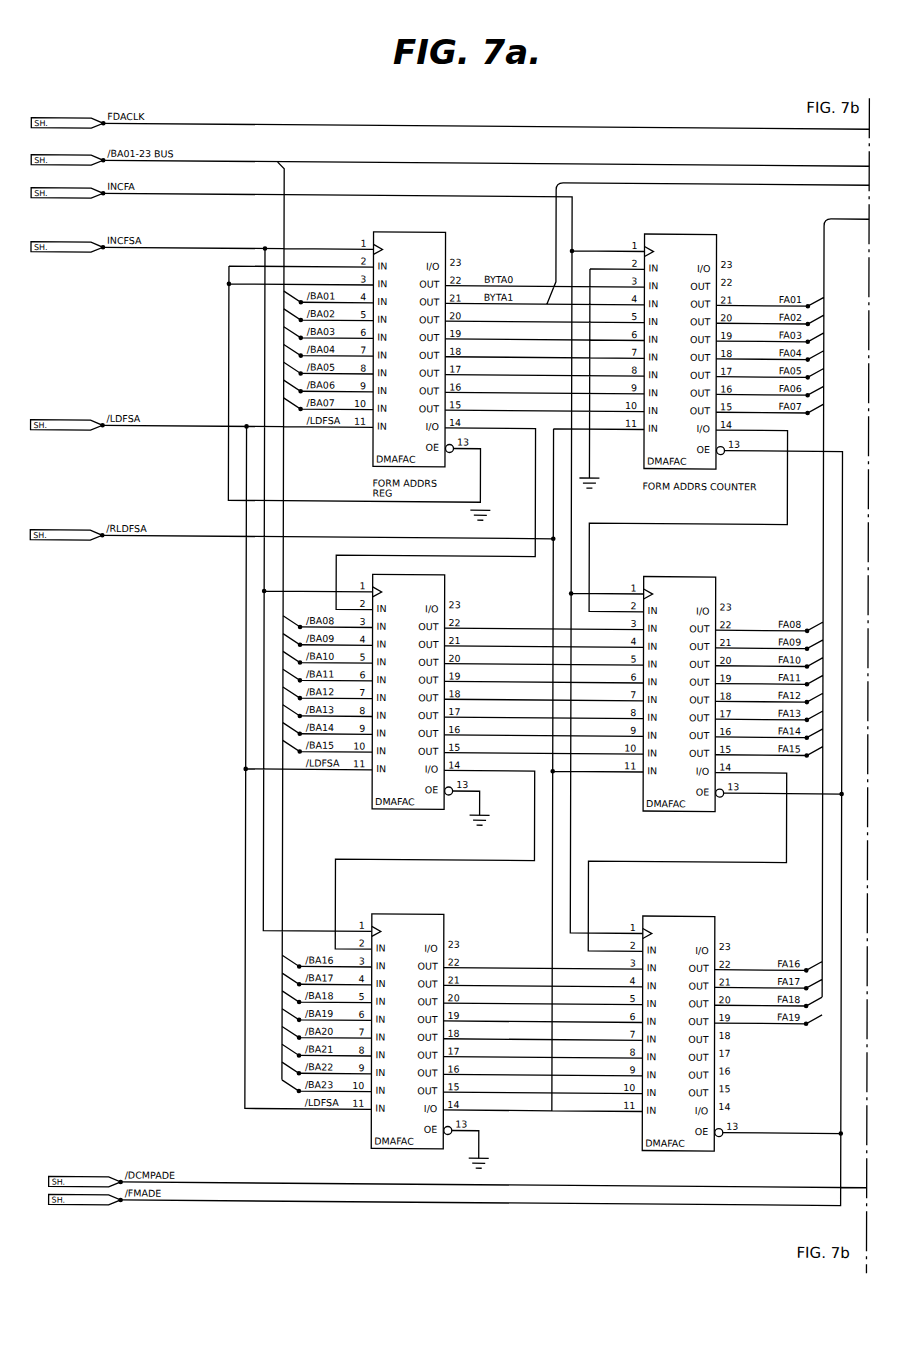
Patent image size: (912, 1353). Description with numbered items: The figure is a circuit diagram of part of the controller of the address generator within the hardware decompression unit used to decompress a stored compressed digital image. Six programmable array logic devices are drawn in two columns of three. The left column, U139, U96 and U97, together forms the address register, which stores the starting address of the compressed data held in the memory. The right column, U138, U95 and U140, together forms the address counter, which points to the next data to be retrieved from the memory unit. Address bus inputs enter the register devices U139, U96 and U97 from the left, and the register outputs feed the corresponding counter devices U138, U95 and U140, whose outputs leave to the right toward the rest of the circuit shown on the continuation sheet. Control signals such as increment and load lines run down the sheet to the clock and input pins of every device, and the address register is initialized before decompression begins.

The address register U139 is at (412, 342).
The address counter U138 is at (683, 344).
The address register U96 is at (411, 685).
The address counter U95 is at (682, 687).
The address register U97 is at (410, 1024).
The address counter U140 is at (681, 1026).